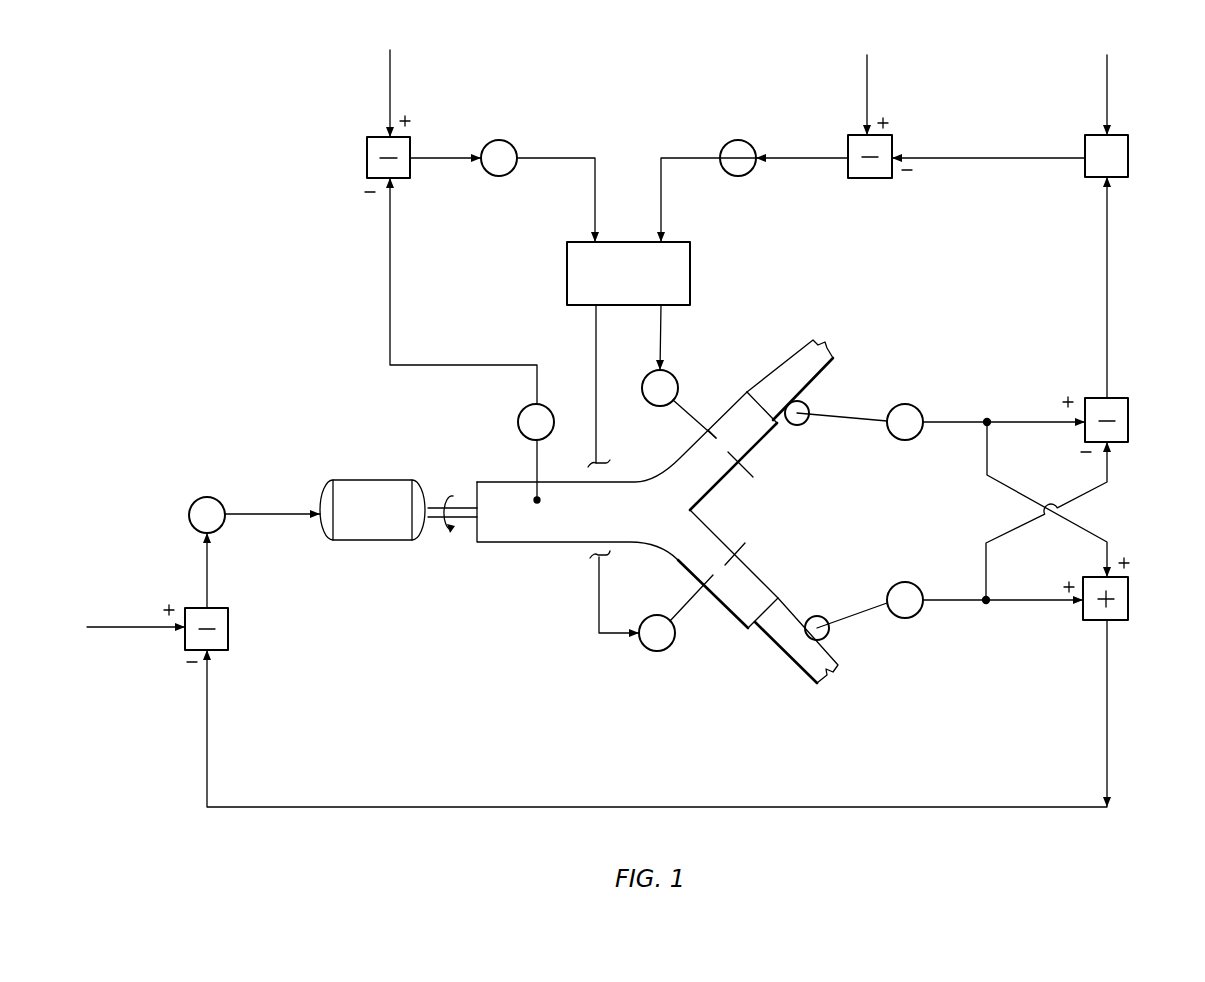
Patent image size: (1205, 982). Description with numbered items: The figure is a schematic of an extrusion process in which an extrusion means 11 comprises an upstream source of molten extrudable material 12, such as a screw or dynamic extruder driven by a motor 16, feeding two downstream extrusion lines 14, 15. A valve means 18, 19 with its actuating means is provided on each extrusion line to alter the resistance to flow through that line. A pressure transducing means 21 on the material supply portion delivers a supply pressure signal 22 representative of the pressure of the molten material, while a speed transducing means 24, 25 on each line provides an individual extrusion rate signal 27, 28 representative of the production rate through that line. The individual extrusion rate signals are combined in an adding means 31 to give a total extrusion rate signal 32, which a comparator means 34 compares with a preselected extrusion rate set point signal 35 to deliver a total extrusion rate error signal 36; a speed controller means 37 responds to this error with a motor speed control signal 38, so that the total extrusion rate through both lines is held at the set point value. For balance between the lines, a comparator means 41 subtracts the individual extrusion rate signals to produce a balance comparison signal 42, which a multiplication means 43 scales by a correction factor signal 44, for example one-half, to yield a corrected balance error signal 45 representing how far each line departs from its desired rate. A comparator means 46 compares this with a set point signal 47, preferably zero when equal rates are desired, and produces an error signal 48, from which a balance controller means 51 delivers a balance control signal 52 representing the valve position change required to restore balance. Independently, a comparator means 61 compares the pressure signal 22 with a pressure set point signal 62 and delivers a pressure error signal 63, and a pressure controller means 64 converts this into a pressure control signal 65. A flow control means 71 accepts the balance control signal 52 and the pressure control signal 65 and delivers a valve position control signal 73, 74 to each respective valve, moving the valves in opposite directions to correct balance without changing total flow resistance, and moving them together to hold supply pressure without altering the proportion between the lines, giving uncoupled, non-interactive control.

The extrusion means 11 is at (657, 511).
The source of molten extrudable material 12 is at (513, 482).
The extrusion line 14 is at (758, 447).
The extrusion line 15 is at (763, 580).
The motor 16 is at (372, 482).
The valve means 18 is at (673, 377).
The valve means 19 is at (667, 650).
The pressure transducing means 21 is at (517, 415).
The supply pressure signal 22 is at (392, 268).
The speed transducing means 24 is at (918, 407).
The speed transducing means 25 is at (920, 586).
The individual extrusion rate signal 27 is at (998, 420).
The individual extrusion rate signal 28 is at (976, 600).
The adding means 31 is at (1128, 603).
The total extrusion rate signal 32 is at (635, 809).
The comparator means 34 is at (228, 625).
The extrusion rate set point signal 35 is at (122, 627).
The total extrusion rate error signal 36 is at (209, 575).
The speed controller means 37 is at (199, 499).
The motor speed control signal 38 is at (289, 513).
The comparator means 41 is at (1130, 403).
The balance comparison signal 42 is at (1109, 284).
The multiplication means 43 is at (1128, 160).
The correction factor signal 44 is at (1109, 70).
The corrected balance error signal 45 is at (990, 157).
The comparator means 46 is at (880, 180).
The set point signal 47 is at (869, 70).
The error signal 48 is at (793, 157).
The balance controller means 51 is at (721, 155).
The balance control signal 52 is at (677, 156).
The comparator means 61 is at (367, 158).
The pressure set point signal 62 is at (392, 70).
The pressure error signal 63 is at (443, 157).
The pressure controller means 64 is at (514, 148).
The pressure control signal 65 is at (575, 157).
The flow control means 71 is at (692, 270).
The valve position control signal 73 is at (662, 322).
The valve position control signal 74 is at (594, 330).